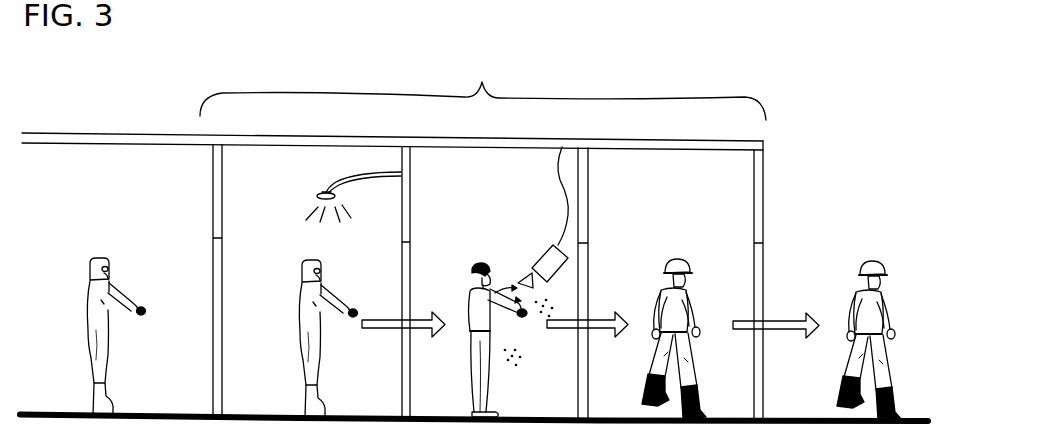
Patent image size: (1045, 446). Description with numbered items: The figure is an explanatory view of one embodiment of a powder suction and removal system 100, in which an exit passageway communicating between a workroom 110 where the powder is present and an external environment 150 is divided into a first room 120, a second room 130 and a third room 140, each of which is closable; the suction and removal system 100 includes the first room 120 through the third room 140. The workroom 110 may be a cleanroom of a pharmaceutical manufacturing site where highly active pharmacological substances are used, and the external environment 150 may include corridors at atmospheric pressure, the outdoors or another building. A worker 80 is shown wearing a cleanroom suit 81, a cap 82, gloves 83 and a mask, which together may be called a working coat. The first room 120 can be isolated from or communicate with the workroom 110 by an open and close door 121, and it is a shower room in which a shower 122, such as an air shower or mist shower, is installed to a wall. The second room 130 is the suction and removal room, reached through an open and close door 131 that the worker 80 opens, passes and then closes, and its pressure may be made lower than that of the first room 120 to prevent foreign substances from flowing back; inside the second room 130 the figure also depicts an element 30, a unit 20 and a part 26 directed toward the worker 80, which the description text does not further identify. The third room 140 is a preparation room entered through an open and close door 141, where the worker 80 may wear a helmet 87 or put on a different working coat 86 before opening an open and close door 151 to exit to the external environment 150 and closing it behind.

The suction and removal system 100 is at (483, 90).
The workroom 110 is at (155, 181).
The first room 120 is at (266, 181).
The second room 130 is at (490, 183).
The third room 140 is at (643, 181).
The external environment 150 is at (837, 187).
The open and close door 121 is at (212, 365).
The open and close door 131 is at (400, 284).
The open and close door 141 is at (577, 374).
The open and close door 151 is at (766, 378).
The shower 122 is at (344, 187).
The supply cable 30 is at (560, 180).
The dispensing device 20 is at (544, 249).
The nozzle 26 is at (521, 277).
The worker 80 is at (469, 326).
The cleanroom suit 81 is at (89, 355).
The cap 82 is at (96, 258).
The gloves 83 is at (136, 315).
The working coat 86 is at (659, 357).
The helmet 87 is at (681, 260).